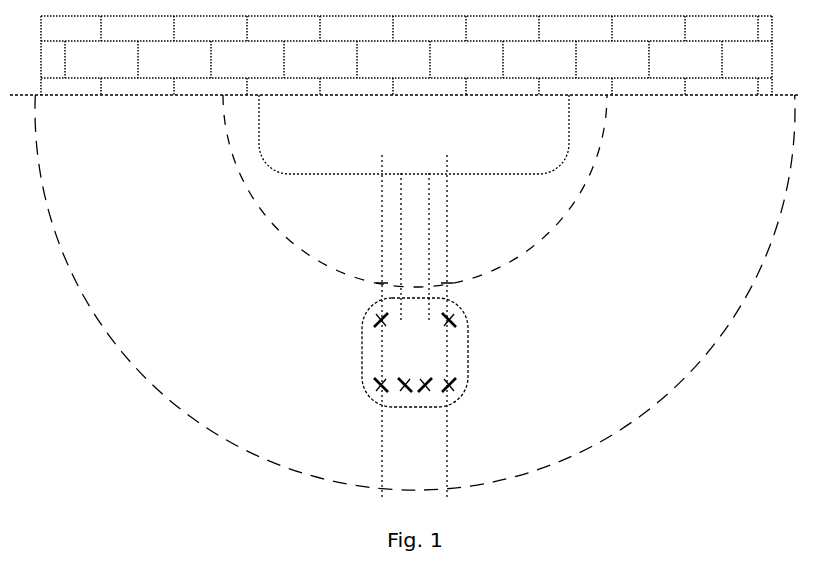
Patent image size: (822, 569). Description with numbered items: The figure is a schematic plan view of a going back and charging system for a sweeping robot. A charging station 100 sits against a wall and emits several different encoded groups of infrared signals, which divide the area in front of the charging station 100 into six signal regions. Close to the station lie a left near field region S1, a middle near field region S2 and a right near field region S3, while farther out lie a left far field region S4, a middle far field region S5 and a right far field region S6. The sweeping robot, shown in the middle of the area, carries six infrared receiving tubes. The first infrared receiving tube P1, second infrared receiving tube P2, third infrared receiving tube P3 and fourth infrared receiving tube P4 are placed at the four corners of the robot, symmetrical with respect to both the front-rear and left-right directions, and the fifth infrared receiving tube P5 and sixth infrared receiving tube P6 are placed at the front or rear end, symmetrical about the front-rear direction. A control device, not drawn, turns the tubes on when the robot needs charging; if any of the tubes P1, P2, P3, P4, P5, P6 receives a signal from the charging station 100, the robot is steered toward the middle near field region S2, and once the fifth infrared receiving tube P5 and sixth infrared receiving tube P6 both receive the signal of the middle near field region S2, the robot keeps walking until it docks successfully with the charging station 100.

The charging station 100 is at (414, 134).
The left near field region S1 is at (322, 195).
The middle near field region S2 is at (415, 213).
The right near field region S3 is at (512, 195).
The left far field region S4 is at (259, 332).
The middle far field region S5 is at (415, 460).
The right far field region S6 is at (590, 332).
The first infrared receiving tube P1 is at (380, 310).
The second infrared receiving tube P2 is at (457, 310).
The third infrared receiving tube P3 is at (378, 394).
The fourth infrared receiving tube P4 is at (455, 392).
The fifth infrared receiving tube P5 is at (403, 396).
The sixth infrared receiving tube P6 is at (427, 396).